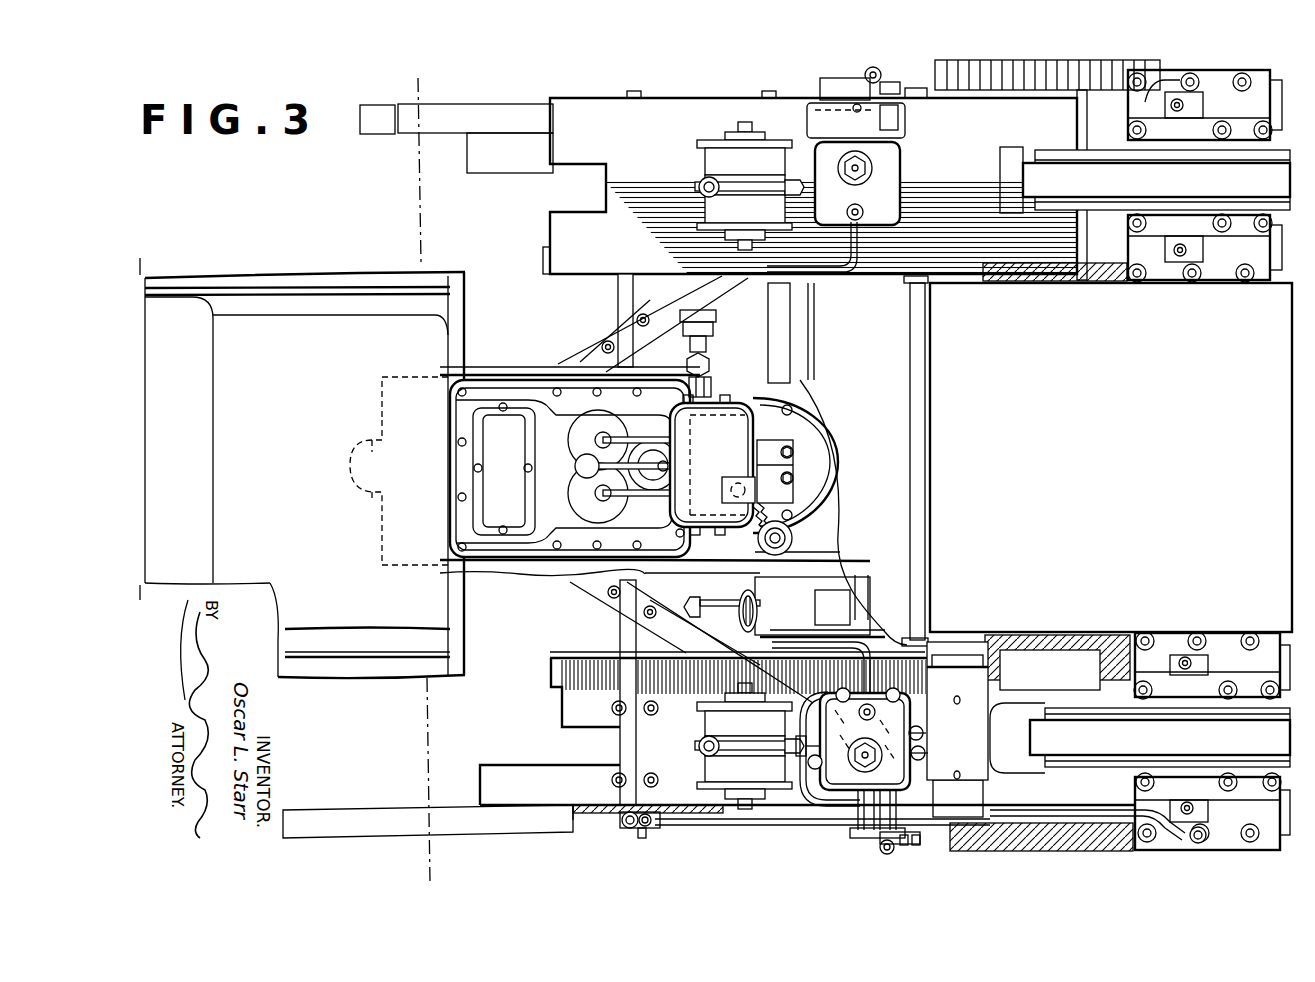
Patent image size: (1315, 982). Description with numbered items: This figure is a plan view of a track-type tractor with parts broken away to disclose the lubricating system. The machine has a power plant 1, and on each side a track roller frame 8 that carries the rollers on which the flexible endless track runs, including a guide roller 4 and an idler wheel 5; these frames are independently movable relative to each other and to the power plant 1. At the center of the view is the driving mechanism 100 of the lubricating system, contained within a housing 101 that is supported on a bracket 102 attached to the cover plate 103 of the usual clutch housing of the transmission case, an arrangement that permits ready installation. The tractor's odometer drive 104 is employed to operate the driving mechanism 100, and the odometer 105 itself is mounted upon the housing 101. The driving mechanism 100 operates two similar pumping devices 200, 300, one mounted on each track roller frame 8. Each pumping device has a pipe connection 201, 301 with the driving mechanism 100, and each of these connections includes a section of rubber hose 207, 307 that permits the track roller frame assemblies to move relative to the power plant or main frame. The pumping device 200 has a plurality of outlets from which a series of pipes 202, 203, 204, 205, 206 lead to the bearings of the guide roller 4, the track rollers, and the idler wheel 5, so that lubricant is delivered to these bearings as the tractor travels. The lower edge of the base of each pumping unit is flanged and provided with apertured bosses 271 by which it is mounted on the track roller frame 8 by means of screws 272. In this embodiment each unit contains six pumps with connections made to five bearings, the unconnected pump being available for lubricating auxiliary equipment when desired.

The power plant 1 is at (1142, 476).
The guide roller 4 is at (708, 160).
The idler wheel 5 is at (1148, 192).
The track roller frame 8 is at (458, 118).
The driving mechanism 100 is at (786, 417).
The housing 101 is at (730, 437).
The bracket 102 is at (777, 486).
The cover plate 103 is at (815, 462).
The odometer drive 104 is at (782, 531).
The odometer 105 is at (743, 480).
The pumping device 200 is at (978, 729).
The pipe connection 201 is at (745, 565).
The pipe 202 is at (800, 771).
The pipe 203 is at (698, 826).
The pipe 204 is at (832, 836).
The pipe 205 is at (935, 832).
The pipe 206 is at (1028, 815).
The rubber hose 207 is at (810, 656).
The apertured bosses 271 is at (922, 734).
The screws 272 is at (924, 753).
The pumping device 300 is at (962, 163).
The pipe connection 301 is at (757, 312).
The rubber hose 307 is at (849, 278).